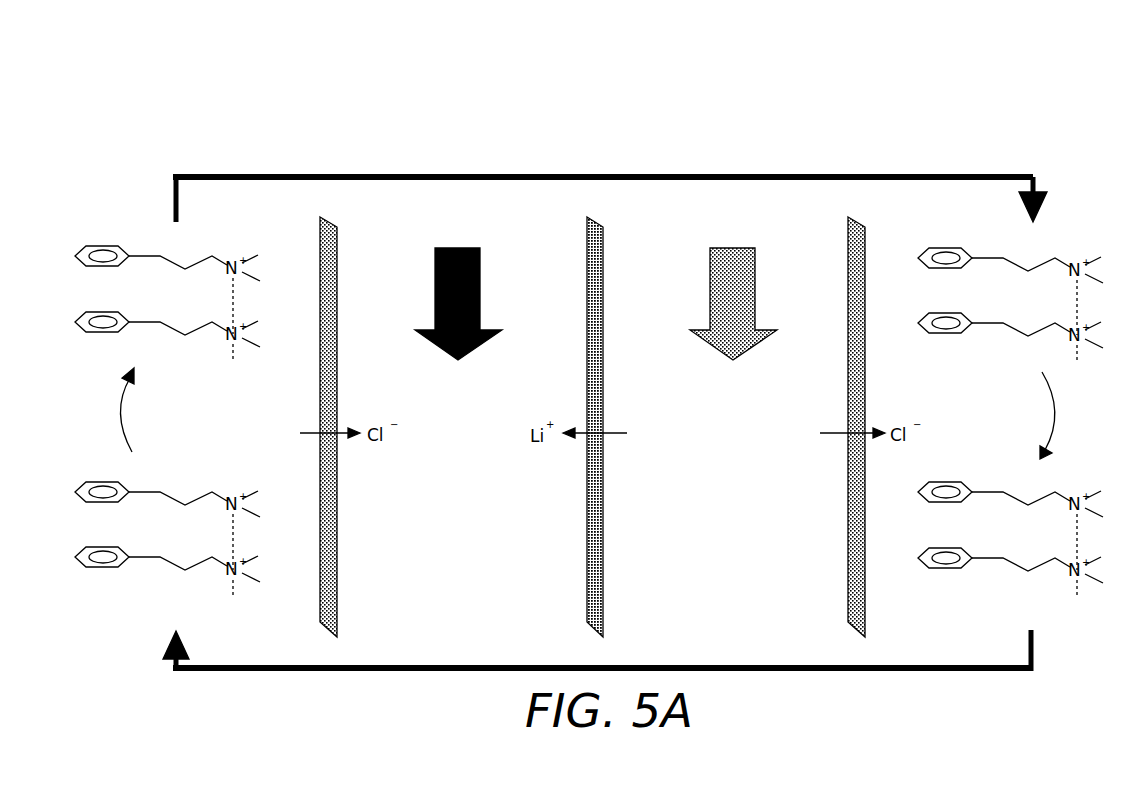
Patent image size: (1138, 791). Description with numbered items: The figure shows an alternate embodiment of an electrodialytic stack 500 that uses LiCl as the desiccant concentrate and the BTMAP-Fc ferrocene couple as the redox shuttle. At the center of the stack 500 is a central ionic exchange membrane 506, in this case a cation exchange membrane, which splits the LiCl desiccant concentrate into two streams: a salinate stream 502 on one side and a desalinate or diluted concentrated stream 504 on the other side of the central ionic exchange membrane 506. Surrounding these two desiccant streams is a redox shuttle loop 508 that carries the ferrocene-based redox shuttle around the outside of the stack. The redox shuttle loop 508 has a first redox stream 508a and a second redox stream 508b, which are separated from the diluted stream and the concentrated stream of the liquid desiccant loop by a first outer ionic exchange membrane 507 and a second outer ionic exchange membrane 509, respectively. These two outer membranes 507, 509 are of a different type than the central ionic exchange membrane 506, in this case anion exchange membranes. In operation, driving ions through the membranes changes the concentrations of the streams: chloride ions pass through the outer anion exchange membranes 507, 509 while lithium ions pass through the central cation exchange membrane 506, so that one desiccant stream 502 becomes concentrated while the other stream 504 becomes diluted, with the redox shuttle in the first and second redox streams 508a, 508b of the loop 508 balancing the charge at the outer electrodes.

The electrodialytic stack 500 is at (1030, 109).
The salinate stream 502 is at (480, 300).
The concentrated stream 504 is at (757, 300).
The central ionic exchange membrane 506 is at (605, 245).
The first outer ionic exchange membrane 507 is at (334, 221).
The redox shuttle loop 508 is at (225, 173).
The first redox stream 508a is at (90, 243).
The second redox stream 508b is at (1098, 253).
The second outer ionic exchange membrane 509 is at (868, 245).